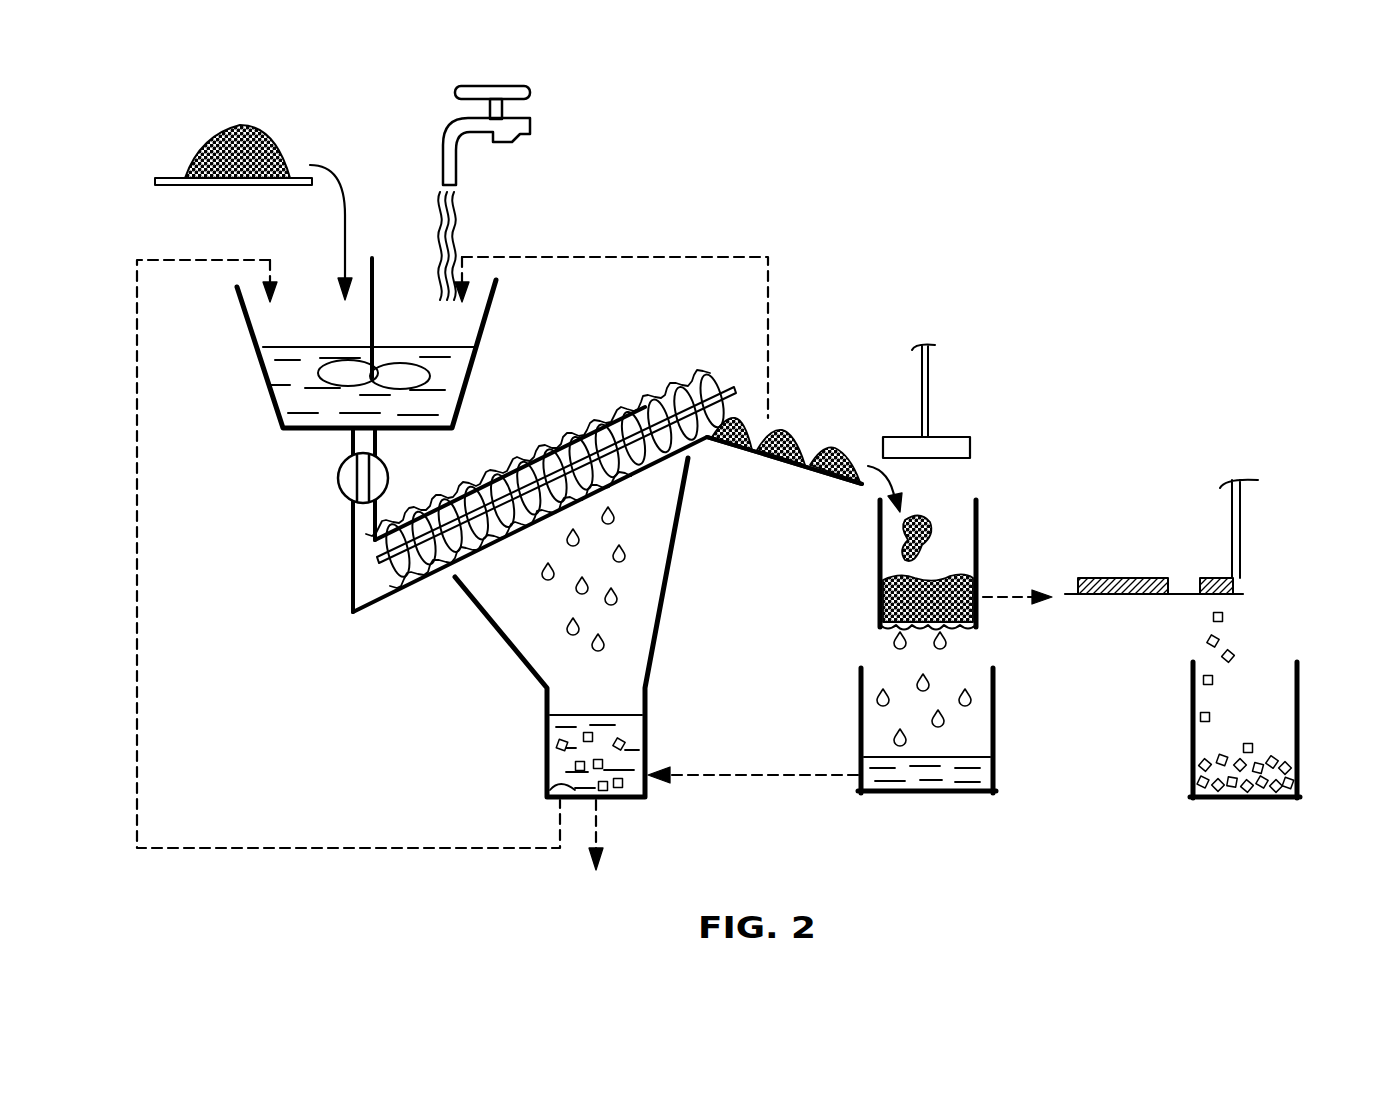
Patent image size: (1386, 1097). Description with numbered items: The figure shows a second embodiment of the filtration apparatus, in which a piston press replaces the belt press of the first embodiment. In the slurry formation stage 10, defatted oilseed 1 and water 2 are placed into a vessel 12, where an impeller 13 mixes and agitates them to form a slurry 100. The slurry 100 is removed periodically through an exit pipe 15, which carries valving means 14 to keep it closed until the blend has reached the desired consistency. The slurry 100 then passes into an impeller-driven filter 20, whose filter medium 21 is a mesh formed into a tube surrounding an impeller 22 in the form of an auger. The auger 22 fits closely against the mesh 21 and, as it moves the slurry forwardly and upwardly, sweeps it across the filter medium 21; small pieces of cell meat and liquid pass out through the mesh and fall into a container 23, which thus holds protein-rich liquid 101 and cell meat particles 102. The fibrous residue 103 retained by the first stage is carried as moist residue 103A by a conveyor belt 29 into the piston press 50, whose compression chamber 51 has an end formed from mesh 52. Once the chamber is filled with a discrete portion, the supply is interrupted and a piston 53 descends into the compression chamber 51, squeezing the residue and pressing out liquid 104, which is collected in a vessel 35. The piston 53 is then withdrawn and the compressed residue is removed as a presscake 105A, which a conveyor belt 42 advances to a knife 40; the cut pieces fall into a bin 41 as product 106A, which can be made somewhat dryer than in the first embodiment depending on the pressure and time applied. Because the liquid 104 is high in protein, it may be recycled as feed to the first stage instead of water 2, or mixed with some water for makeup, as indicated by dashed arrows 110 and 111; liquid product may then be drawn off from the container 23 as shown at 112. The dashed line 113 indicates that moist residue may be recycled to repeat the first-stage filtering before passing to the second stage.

The defatted oilseed 1 is at (218, 138).
The water 2 is at (455, 240).
The slurry formation stage 10 is at (374, 339).
The vessel 12 is at (488, 322).
The impeller 13 is at (375, 266).
The valving means 14 is at (338, 478).
The exit pipe 15 is at (352, 530).
The impeller-driven filter 20 is at (607, 478).
The filter medium 21 is at (620, 488).
The impeller 22 is at (616, 416).
The container 23 is at (586, 750).
The conveyor belt 29 is at (802, 468).
The vessel 35 is at (957, 762).
The knife 40 is at (1243, 512).
The bin 41 is at (1300, 728).
The conveyor belt 42 is at (1170, 596).
The piston press 50 is at (978, 492).
The compression chamber 51 is at (983, 525).
The mesh 52 is at (953, 628).
The piston 53 is at (930, 375).
The slurry 100 is at (290, 405).
The liquid 101 is at (560, 748).
The cell meat particles 102 is at (548, 784).
The residue 103 is at (788, 424).
The moist residue 103A is at (950, 597).
The liquid 104 is at (958, 775).
The presscake 105A is at (1150, 545).
The product 106A is at (1258, 800).
The dashed arrow 110 is at (766, 776).
The dashed arrow 111 is at (250, 848).
The liquid product draw-off 112 is at (598, 818).
The dashed line 113 is at (625, 257).